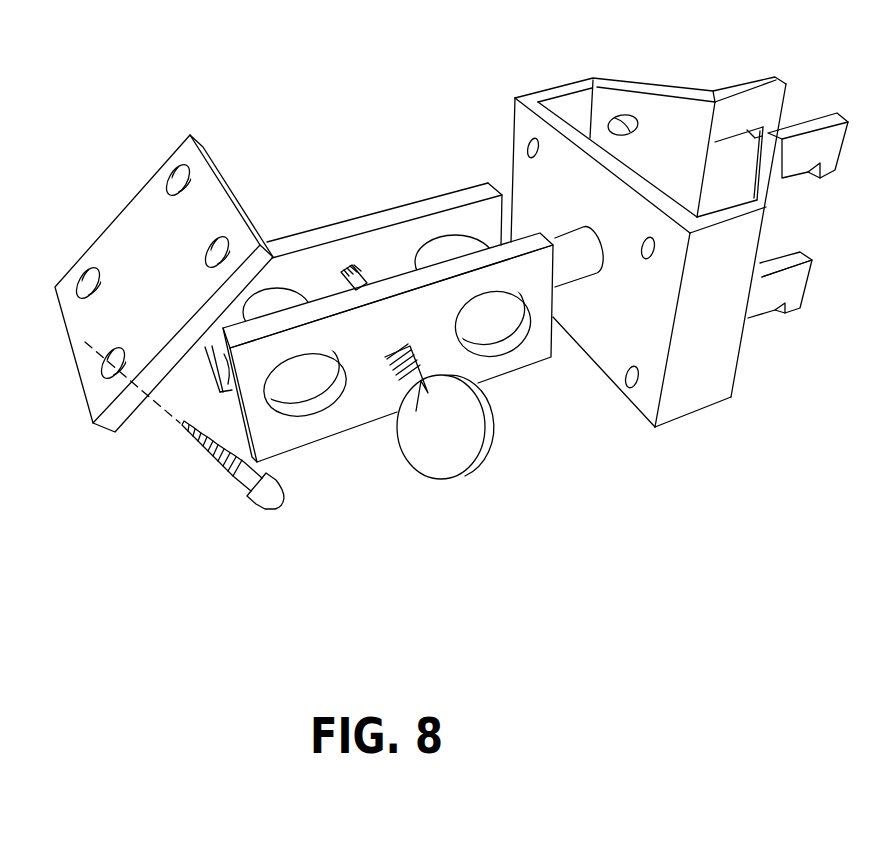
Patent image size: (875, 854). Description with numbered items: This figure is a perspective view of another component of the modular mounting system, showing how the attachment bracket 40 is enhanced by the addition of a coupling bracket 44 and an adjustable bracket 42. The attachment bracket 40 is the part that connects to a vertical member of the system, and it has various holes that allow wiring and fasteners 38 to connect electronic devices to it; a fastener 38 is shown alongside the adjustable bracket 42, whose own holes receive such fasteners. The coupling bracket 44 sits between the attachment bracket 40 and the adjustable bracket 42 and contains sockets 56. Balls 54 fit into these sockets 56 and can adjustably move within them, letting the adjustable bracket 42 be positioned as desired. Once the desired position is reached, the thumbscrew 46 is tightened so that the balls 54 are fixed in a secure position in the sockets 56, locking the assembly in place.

The fasteners 38 is at (253, 480).
The attachment bracket 40 is at (668, 110).
The adjustable bracket 42 is at (130, 242).
The coupling bracket 44 is at (382, 243).
The thumbscrew 46 is at (445, 448).
The balls 54 is at (287, 302).
The sockets 56 is at (315, 398).